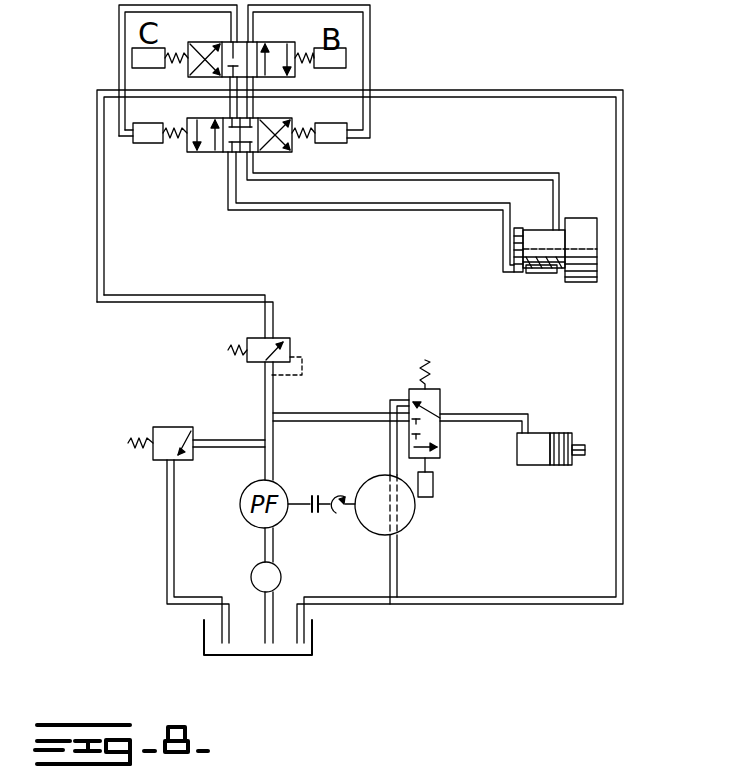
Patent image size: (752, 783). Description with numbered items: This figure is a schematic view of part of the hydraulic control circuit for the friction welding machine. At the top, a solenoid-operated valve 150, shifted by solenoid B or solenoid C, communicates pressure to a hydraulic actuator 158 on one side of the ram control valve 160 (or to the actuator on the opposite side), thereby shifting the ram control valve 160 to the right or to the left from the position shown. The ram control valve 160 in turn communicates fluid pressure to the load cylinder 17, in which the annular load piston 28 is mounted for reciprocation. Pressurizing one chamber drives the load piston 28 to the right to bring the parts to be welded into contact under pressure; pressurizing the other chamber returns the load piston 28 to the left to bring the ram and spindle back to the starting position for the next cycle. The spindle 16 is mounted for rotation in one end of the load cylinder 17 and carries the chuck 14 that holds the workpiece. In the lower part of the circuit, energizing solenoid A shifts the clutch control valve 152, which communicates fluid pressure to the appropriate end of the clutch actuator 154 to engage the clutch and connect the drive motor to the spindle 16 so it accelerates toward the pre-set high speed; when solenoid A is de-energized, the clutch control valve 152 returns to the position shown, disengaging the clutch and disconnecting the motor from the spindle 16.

The chuck 14 is at (588, 240).
The spindle 16 is at (557, 240).
The load cylinder 17 is at (542, 271).
The piston 28 is at (522, 228).
The solenoid operated control valve 150 is at (277, 30).
The clutch control valve 152 is at (450, 400).
The clutch actuator 154 is at (540, 434).
The hydraulic actuator 158 is at (140, 146).
The ram control valve 160 is at (216, 155).